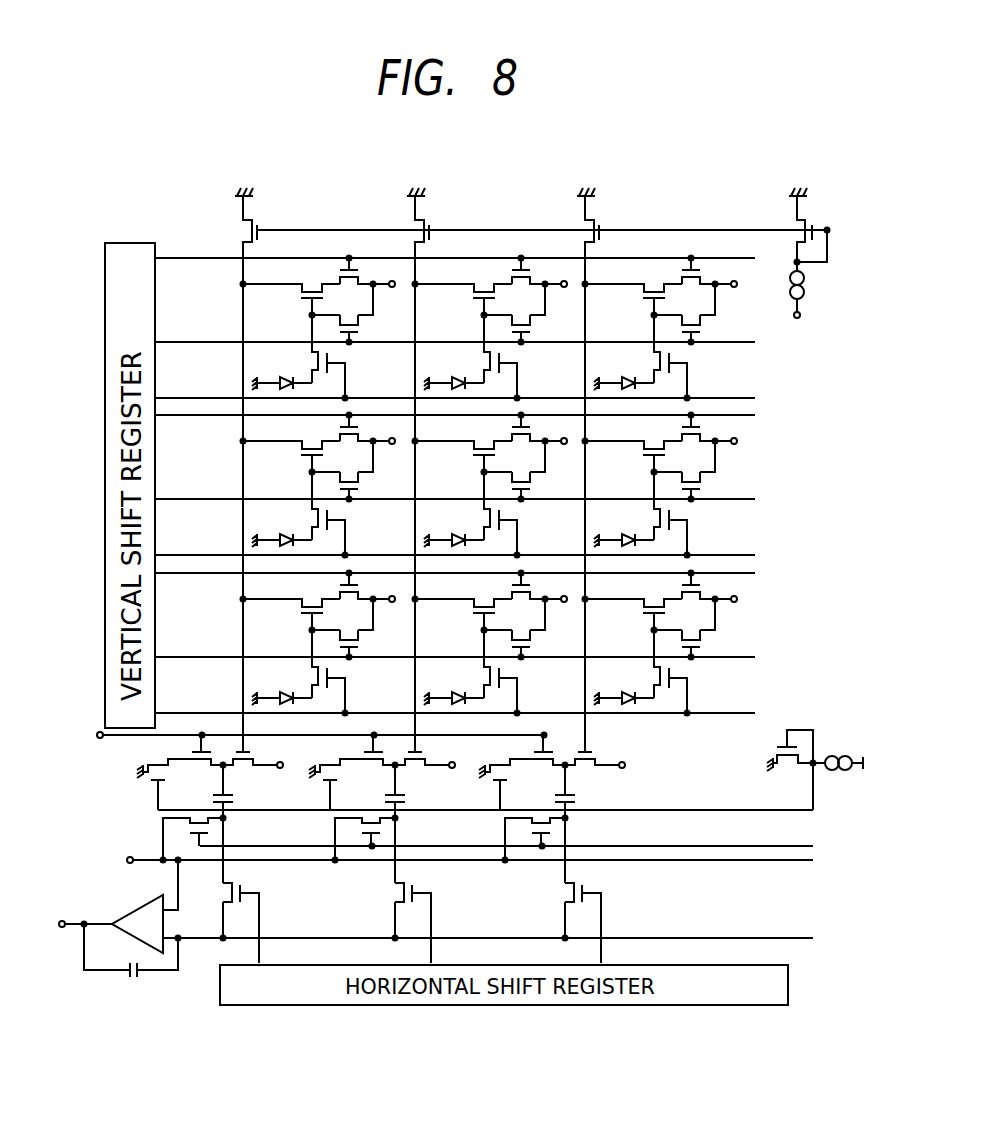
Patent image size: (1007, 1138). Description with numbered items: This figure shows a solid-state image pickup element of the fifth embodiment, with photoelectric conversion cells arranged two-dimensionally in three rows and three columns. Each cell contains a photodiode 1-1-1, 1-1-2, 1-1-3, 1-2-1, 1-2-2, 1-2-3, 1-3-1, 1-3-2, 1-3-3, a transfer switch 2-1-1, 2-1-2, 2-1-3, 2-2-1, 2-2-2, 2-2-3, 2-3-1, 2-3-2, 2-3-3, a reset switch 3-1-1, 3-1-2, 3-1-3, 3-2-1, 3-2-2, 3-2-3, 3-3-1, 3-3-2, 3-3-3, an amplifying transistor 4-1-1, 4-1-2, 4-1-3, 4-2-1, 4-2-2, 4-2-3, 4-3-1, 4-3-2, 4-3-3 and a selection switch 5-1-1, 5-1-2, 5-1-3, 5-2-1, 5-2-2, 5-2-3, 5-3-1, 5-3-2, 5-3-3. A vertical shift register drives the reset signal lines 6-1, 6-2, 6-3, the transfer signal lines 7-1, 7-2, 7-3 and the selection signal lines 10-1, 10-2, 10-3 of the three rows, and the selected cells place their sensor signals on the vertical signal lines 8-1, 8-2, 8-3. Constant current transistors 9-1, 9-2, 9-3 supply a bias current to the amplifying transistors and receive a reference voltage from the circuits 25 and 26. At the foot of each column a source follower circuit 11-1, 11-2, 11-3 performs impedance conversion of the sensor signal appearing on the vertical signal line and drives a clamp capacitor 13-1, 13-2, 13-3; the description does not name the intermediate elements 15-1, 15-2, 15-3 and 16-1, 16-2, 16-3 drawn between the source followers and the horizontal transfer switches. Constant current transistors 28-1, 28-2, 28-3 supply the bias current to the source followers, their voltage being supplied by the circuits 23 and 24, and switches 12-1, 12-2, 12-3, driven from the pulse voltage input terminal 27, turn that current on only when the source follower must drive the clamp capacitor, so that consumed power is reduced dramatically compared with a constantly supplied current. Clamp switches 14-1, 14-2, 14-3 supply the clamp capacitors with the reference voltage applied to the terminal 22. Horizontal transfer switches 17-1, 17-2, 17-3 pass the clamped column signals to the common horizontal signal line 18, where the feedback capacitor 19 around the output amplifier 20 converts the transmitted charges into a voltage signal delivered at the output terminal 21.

The photodiode 1-1-1 is at (281, 368).
The photodiode 1-1-2 is at (453, 368).
The photodiode 1-1-3 is at (623, 368).
The photodiode 1-2-1 is at (281, 525).
The photodiode 1-2-2 is at (453, 525).
The photodiode 1-2-3 is at (623, 525).
The photodiode 1-3-1 is at (281, 683).
The photodiode 1-3-2 is at (453, 683).
The photodiode 1-3-3 is at (623, 683).
The transfer switch 2-1-1 is at (356, 358).
The transfer switch 2-1-2 is at (528, 358).
The transfer switch 2-1-3 is at (698, 358).
The transfer switch 2-2-1 is at (356, 515).
The transfer switch 2-2-2 is at (528, 515).
The transfer switch 2-2-3 is at (698, 515).
The transfer switch 2-3-1 is at (356, 673).
The transfer switch 2-3-2 is at (528, 673).
The transfer switch 2-3-3 is at (698, 673).
The reset switch 3-1-1 is at (377, 330).
The reset switch 3-1-2 is at (549, 330).
The reset switch 3-1-3 is at (719, 330).
The reset switch 3-2-1 is at (377, 487).
The reset switch 3-2-2 is at (549, 487).
The reset switch 3-2-3 is at (719, 487).
The reset switch 3-3-1 is at (377, 645).
The reset switch 3-3-2 is at (549, 645).
The reset switch 3-3-3 is at (719, 645).
The amplifying transistor 4-1-1 is at (290, 288).
The amplifying transistor 4-1-2 is at (462, 288).
The amplifying transistor 4-1-3 is at (632, 288).
The amplifying transistor 4-2-1 is at (290, 445).
The amplifying transistor 4-2-2 is at (462, 445).
The amplifying transistor 4-2-3 is at (632, 445).
The amplifying transistor 4-3-1 is at (290, 603).
The amplifying transistor 4-3-2 is at (462, 603).
The amplifying transistor 4-3-3 is at (632, 603).
The selection switch 5-1-1 is at (376, 271).
The selection switch 5-1-2 is at (548, 271).
The selection switch 5-1-3 is at (718, 271).
The selection switch 5-2-1 is at (376, 428).
The selection switch 5-2-2 is at (548, 428).
The selection switch 5-2-3 is at (718, 428).
The selection switch 5-3-1 is at (376, 586).
The selection switch 5-3-2 is at (548, 586).
The selection switch 5-3-3 is at (718, 586).
The reset signal line 6-1 is at (455, 324).
The reset signal line 6-2 is at (455, 481).
The reset signal line 6-3 is at (455, 639).
The transfer signal line 7-1 is at (455, 381).
The transfer signal line 7-2 is at (455, 538).
The transfer signal line 7-3 is at (455, 696).
The vertical signal line 8-1 is at (309, 308).
The vertical signal line 8-2 is at (481, 308).
The vertical signal line 8-3 is at (651, 308).
The constant current transistor 9-1 is at (275, 470).
The constant current transistor 9-2 is at (447, 470).
The constant current transistor 9-3 is at (617, 470).
The selection signal line 10-1 is at (455, 278).
The selection signal line 10-2 is at (455, 435).
The selection signal line 10-3 is at (455, 593).
The source follower circuit 11-1 is at (262, 754).
The source follower circuit 11-2 is at (434, 754).
The source follower circuit 11-3 is at (604, 754).
The switch 12-1 is at (183, 752).
The switch 12-2 is at (355, 752).
The switch 12-3 is at (525, 752).
The clamp capacitor 13-1 is at (251, 814).
The clamp capacitor 13-2 is at (423, 814).
The clamp capacitor 13-3 is at (593, 814).
The clamp switch 14-1 is at (192, 824).
The clamp switch 14-2 is at (364, 824).
The clamp switch 14-3 is at (534, 824).
The source follower output node 15-1 is at (249, 779).
The source follower output node 15-2 is at (421, 779).
The source follower output node 15-3 is at (591, 779).
The clamp output wiring 16-1 is at (256, 880).
The clamp output wiring 16-2 is at (428, 880).
The clamp output wiring 16-3 is at (598, 880).
The horizontal transfer switch 17-1 is at (222, 923).
The horizontal transfer switch 17-2 is at (394, 923).
The horizontal transfer switch 17-3 is at (564, 923).
The common horizontal signal line 18 is at (301, 935).
The feedback capacitor 19 is at (143, 973).
The output amplifier 20 is at (132, 912).
The output terminal 21 is at (61, 921).
The terminal 22 is at (129, 856).
The circuit 23 is at (787, 767).
The circuit 24 is at (837, 753).
The circuit 25 is at (805, 284).
The circuit 26 is at (816, 228).
The pulse voltage input terminal 27 is at (99, 739).
The constant current transistor 28-1 is at (139, 787).
The constant current transistor 28-2 is at (311, 787).
The constant current transistor 28-3 is at (481, 787).